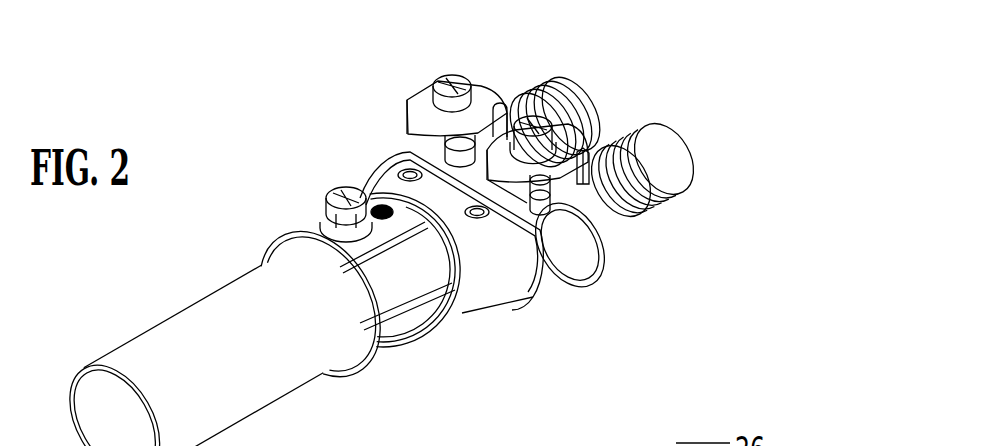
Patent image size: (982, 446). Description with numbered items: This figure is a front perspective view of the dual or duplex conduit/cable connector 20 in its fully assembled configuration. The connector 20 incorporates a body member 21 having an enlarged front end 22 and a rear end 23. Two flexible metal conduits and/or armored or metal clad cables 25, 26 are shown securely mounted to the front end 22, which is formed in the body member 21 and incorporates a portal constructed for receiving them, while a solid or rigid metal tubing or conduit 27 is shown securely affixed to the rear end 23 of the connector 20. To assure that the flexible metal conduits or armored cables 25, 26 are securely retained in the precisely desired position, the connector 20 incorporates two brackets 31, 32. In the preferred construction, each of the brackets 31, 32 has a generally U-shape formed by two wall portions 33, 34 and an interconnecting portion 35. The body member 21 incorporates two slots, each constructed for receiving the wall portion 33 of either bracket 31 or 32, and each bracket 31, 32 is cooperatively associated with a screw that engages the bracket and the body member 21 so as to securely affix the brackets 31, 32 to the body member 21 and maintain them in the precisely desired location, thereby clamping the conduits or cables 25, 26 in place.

The duplex conduit/cable connector 20 is at (363, 178).
The body member 21 is at (475, 297).
The front end 22 is at (605, 243).
The rear end 23 is at (350, 373).
The flexible metal conduit or armored cable 25 is at (664, 164).
The flexible metal conduit or armored cable 26 is at (567, 90).
The rigid metal tubing or conduit 27 is at (160, 357).
The bracket 31 is at (548, 163).
The bracket 32 is at (415, 93).
The wall portion 33 is at (528, 213).
The wall portion 34 is at (583, 148).
The interconnecting portion 35 is at (480, 93).